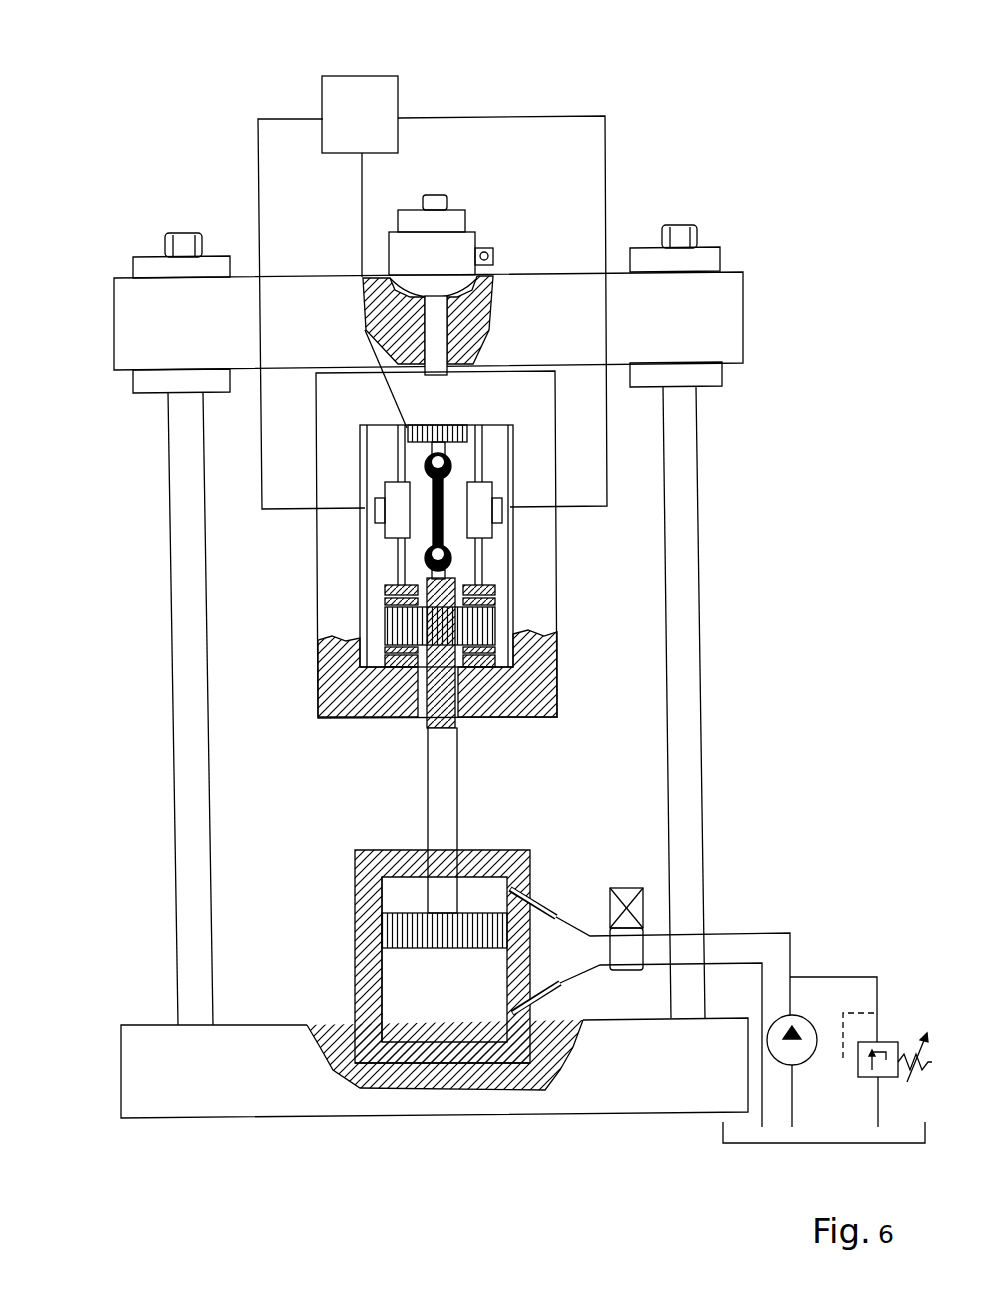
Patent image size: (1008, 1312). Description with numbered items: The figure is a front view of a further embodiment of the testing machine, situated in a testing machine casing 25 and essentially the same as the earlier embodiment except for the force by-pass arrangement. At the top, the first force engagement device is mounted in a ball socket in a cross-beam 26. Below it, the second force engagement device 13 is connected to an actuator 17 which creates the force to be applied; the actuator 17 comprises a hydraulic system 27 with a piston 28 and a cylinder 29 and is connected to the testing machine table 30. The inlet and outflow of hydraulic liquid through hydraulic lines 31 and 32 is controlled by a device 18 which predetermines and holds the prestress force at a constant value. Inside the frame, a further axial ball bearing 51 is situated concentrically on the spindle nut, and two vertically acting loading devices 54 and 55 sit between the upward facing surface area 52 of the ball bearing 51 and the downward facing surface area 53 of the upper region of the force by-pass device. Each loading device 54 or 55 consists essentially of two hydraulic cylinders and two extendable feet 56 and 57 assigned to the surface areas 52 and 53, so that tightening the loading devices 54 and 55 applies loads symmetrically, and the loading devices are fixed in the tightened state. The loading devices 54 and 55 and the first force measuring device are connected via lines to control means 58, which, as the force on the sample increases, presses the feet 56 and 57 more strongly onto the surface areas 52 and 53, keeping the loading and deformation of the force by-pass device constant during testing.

The control means 58 is at (383, 97).
The cross-beam 26 is at (143, 333).
The extendable foot 56 is at (398, 450).
The extendable foot 57 is at (400, 573).
The downward facing surface area 53 is at (508, 423).
The loading device 54 is at (477, 513).
The loading device 55 is at (400, 528).
The upward facing surface area 52 is at (497, 580).
The axial ball bearing 51 is at (510, 637).
The second force engagement device 13 is at (448, 758).
The testing machine casing 25 is at (140, 1074).
The testing machine table 30 is at (258, 1098).
The actuator 17 is at (365, 870).
The hydraulic system 27 is at (357, 983).
The cylinder 29 is at (370, 955).
The piston 28 is at (437, 918).
The hydraulic line 31 is at (590, 940).
The hydraulic line 32 is at (600, 967).
The device 18 is at (890, 1040).